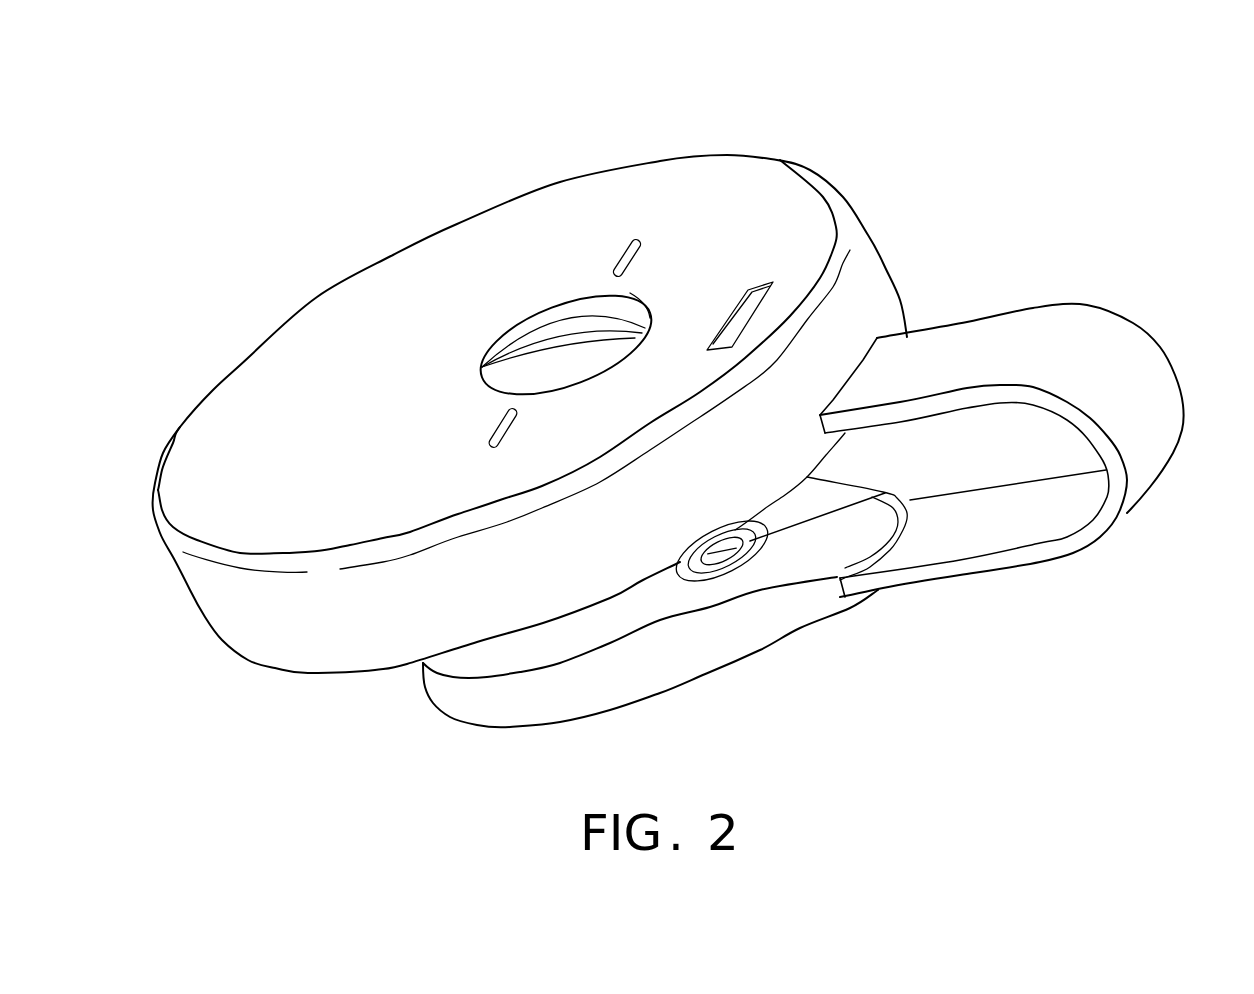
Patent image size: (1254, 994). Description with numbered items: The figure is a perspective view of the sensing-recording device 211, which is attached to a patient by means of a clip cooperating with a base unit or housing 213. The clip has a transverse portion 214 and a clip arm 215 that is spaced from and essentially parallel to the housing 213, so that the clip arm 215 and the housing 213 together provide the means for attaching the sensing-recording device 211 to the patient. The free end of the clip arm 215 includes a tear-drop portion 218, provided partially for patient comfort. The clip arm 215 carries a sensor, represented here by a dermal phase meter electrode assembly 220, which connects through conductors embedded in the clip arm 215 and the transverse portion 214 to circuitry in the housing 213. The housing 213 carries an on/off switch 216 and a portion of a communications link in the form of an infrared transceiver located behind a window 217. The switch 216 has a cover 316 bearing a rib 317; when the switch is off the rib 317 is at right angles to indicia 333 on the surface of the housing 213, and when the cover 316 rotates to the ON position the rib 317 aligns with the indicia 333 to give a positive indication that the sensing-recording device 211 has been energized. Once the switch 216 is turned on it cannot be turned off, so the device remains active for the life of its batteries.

The sensing-recording device 211 is at (298, 225).
The housing 213 is at (866, 273).
The transverse portion 214 is at (1090, 337).
The clip arm 215 is at (1030, 512).
The on/off switch 216 is at (660, 257).
The window 217 is at (751, 303).
The tear-drop portion 218 is at (500, 703).
The dermal phase meter electrode assembly 220 is at (718, 540).
The cover 316 is at (492, 378).
The rib 317 is at (543, 330).
The indicia 333 is at (612, 250).